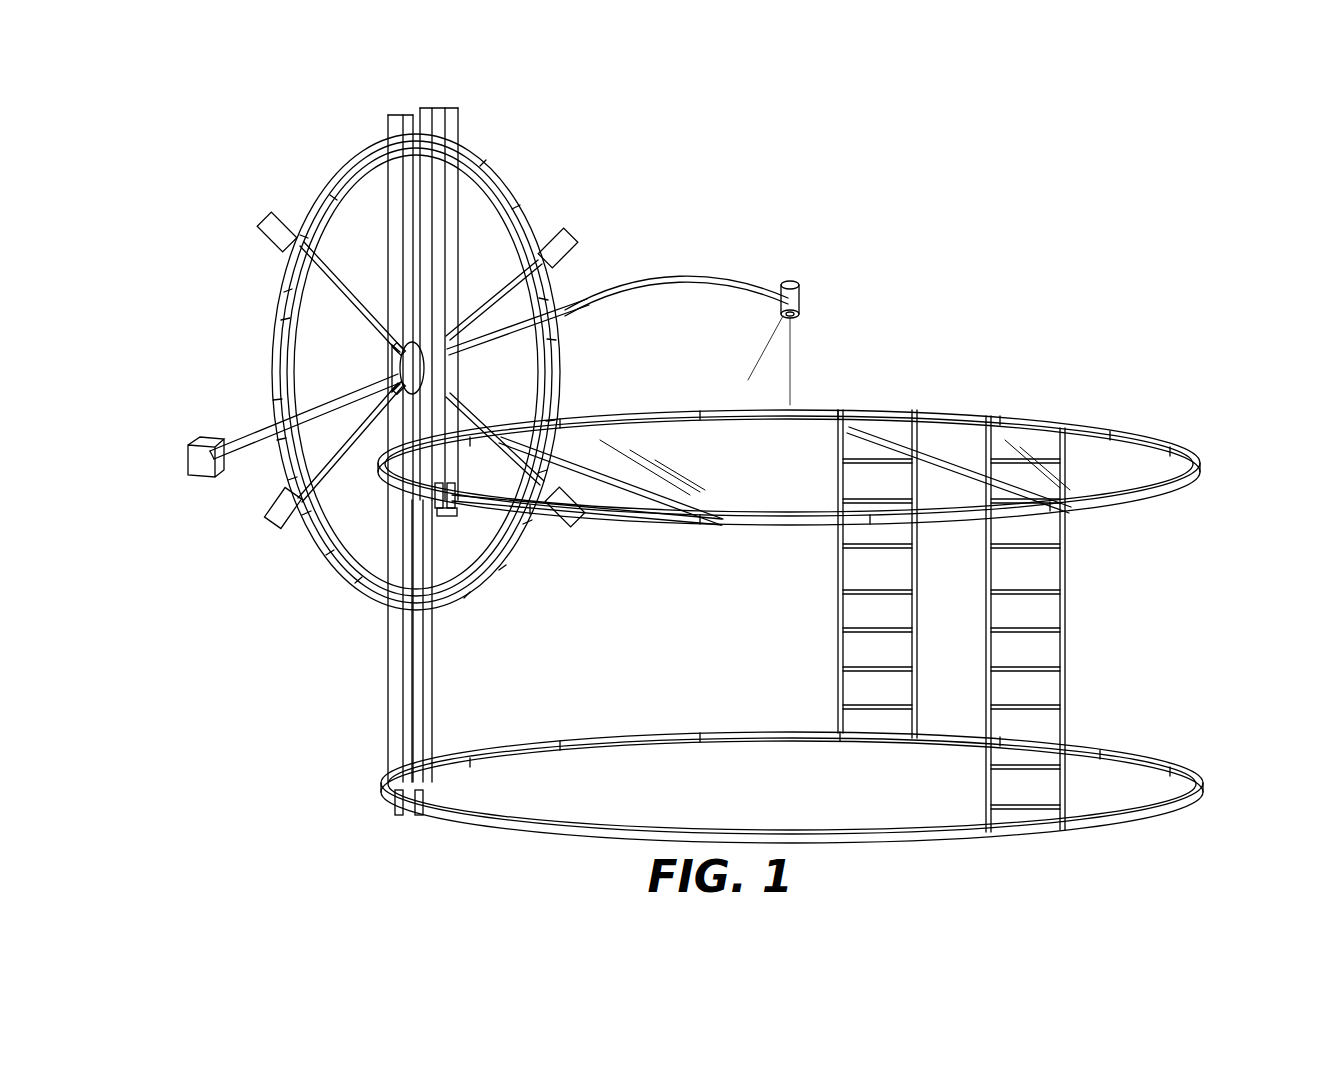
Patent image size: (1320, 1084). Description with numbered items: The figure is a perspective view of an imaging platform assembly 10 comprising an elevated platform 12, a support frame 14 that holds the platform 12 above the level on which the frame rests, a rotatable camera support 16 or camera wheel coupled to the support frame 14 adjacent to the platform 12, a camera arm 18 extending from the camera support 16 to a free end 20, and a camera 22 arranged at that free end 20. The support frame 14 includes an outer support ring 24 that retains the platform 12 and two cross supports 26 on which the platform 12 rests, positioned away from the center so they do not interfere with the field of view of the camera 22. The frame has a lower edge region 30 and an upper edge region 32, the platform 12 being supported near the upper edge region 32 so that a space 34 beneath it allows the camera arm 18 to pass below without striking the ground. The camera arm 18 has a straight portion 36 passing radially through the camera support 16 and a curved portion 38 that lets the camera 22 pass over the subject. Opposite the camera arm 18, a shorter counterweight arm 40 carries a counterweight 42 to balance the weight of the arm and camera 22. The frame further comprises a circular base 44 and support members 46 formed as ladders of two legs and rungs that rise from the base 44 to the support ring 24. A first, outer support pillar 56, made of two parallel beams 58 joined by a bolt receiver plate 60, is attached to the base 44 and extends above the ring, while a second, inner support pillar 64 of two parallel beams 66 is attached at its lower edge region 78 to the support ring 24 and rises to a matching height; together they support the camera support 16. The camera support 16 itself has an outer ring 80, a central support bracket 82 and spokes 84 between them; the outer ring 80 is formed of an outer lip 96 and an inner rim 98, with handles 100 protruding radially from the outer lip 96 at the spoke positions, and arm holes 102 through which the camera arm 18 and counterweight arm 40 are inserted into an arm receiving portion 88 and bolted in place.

The imaging platform assembly 10 is at (896, 273).
The elevated platform 12 is at (812, 464).
The support frame 14 is at (786, 639).
The rotatable camera support 16 is at (387, 372).
The camera arm 18 is at (676, 283).
The free end 20 is at (805, 323).
The camera 22 is at (802, 294).
The outer support ring 24 is at (1160, 438).
The cross supports 26 is at (960, 445).
The lower edge region 30 is at (831, 800).
The upper edge region 32 is at (812, 468).
The space 34 is at (589, 660).
The straight portion 36 is at (575, 305).
The curved portion 38 is at (748, 296).
The counterweight arm 40 is at (265, 452).
The counterweight 42 is at (186, 458).
The base 44 is at (1080, 838).
The support members 46 is at (838, 608).
The first outer support pillar 56 is at (445, 673).
The parallel beams 58 is at (388, 712).
The bolt receiver plate 60 is at (408, 278).
The second inner support pillar 64 is at (445, 295).
The parallel beams 66 is at (420, 112).
The lower edge region 78 is at (490, 560).
The outer ring 80 is at (530, 206).
The central support bracket 82 is at (400, 343).
The spokes 84 is at (505, 302).
The arm receiving portion 88 is at (392, 363).
The outer lip 96 is at (330, 198).
The inner rim 98 is at (330, 205).
The handles 100 is at (265, 225).
The arm holes 102 is at (295, 418).